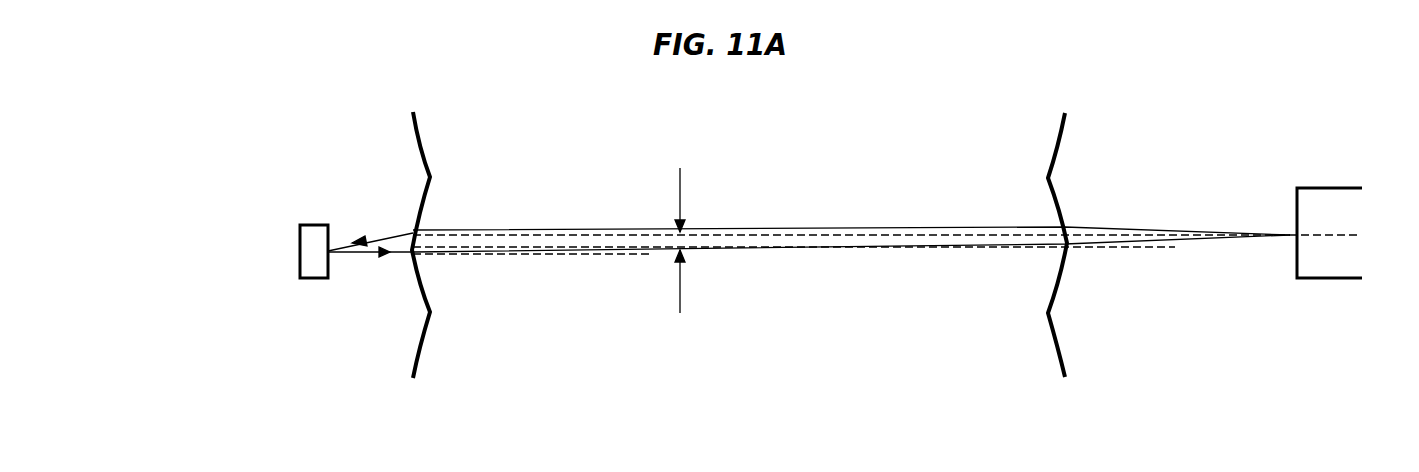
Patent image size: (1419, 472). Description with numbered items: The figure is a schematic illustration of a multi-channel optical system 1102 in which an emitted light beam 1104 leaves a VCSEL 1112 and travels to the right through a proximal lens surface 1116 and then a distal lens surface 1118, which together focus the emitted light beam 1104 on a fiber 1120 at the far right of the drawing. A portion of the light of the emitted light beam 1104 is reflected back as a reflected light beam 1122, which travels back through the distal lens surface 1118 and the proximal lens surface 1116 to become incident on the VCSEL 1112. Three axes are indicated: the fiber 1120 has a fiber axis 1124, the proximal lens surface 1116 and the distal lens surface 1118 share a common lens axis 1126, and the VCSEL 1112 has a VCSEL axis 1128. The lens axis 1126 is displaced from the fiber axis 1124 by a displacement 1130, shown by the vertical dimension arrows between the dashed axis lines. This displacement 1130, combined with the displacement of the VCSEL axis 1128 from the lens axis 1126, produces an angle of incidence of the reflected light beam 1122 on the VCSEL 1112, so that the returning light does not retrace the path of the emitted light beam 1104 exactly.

The multi-channel optical system 1102 is at (690, 107).
The emitted light beam 1104 is at (377, 253).
The VCSEL 1112 is at (312, 230).
The proximal lens surface 1116 is at (423, 207).
The distal lens surface 1118 is at (1048, 182).
The fiber 1120 is at (1295, 205).
The reflected light beam 1122 is at (393, 232).
The fiber axis 1124 is at (828, 235).
The lens axis 1126 is at (707, 247).
The VCSEL axis 1128 is at (596, 254).
The displacement 1130 is at (671, 258).